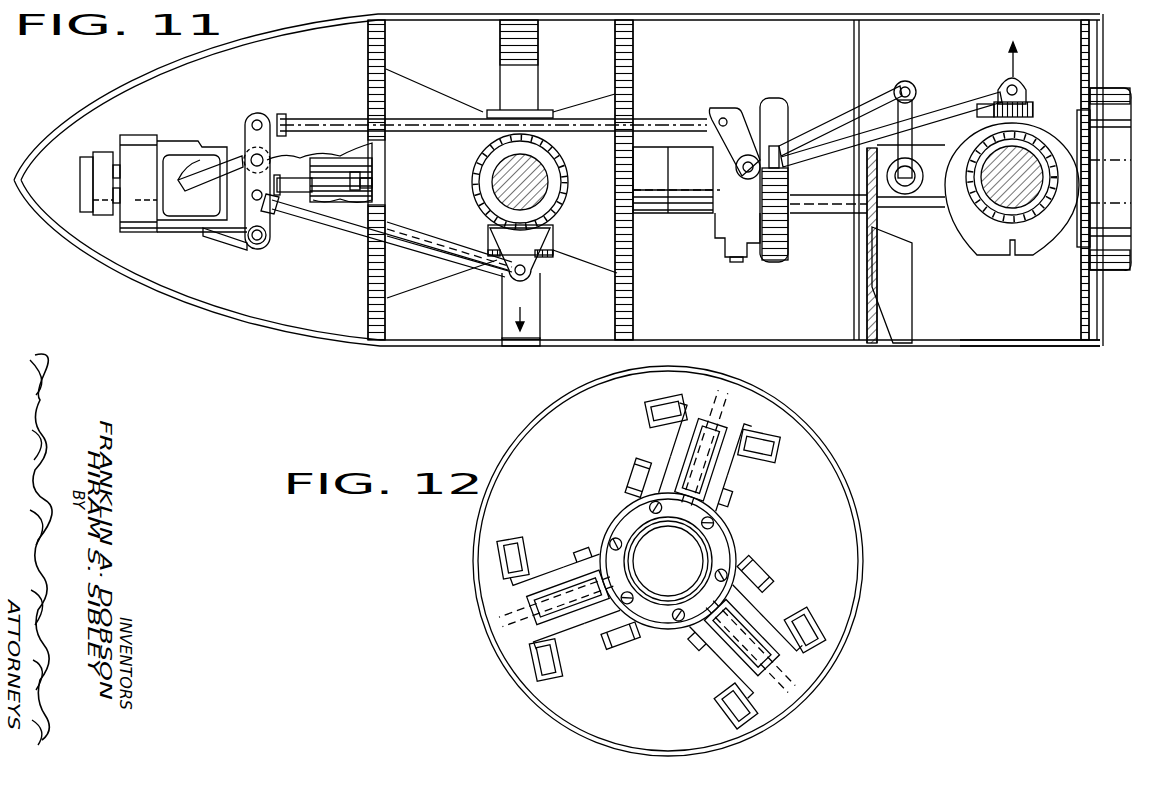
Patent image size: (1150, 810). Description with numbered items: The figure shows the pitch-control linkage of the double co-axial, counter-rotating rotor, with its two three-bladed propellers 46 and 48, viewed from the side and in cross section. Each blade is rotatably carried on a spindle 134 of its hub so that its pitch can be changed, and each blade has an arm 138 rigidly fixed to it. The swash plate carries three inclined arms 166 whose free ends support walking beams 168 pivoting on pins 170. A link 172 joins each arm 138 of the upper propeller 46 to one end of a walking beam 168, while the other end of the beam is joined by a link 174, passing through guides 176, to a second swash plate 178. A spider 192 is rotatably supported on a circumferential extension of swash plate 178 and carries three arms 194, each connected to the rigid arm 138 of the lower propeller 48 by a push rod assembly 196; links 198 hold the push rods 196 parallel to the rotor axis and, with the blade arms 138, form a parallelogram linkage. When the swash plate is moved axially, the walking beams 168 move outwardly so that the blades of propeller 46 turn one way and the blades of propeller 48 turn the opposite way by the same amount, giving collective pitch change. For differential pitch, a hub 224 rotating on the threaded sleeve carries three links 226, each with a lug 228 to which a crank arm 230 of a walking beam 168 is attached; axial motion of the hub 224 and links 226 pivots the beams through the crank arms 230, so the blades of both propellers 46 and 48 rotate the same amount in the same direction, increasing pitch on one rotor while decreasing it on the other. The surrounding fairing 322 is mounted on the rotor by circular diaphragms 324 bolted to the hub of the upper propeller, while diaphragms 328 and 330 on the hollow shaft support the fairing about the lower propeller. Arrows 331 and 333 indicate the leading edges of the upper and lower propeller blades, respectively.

In FIG. 11, the propeller 46 is at (566, 221).
In FIG. 11, the propeller 48 is at (1010, 243).
In FIG. 11, the spindle 134 is at (1027, 200).
In FIG. 11, the arm 138 is at (528, 244).
In FIG. 11, the inclined arm 166 is at (205, 171).
In FIG. 12, the inclined arm 166 is at (711, 464).
In FIG. 11, the walking beam 168 is at (246, 132).
In FIG. 12, the walking beam 168 is at (736, 421).
In FIG. 12, the pin 170 is at (715, 428).
In FIG. 11, the link 172 is at (448, 224).
In FIG. 12, the link 172 is at (774, 447).
In FIG. 11, the link 174 is at (459, 123).
In FIG. 12, the link 174 is at (646, 398).
In FIG. 11, the guide 176 is at (386, 69).
In FIG. 11, the second swash plate 178 is at (722, 227).
In FIG. 11, the spider 192 is at (820, 99).
In FIG. 11, the arm 194 is at (763, 127).
In FIG. 11, the push rod assembly 196 is at (886, 110).
In FIG. 11, the link 198 is at (908, 152).
In FIG. 11, the hub 224 is at (108, 214).
In FIG. 12, the hub 224 is at (658, 612).
In FIG. 11, the link 226 is at (173, 141).
In FIG. 11, the lug 228 is at (240, 246).
In FIG. 12, the lug 228 is at (638, 481).
In FIG. 11, the crank arm 230 is at (268, 219).
In FIG. 12, the crank arm 230 is at (598, 531).
In FIG. 11, the fairing 322 is at (588, 348).
In FIG. 12, the fairing 322 is at (856, 513).
In FIG. 11, the circular diaphragm 324 is at (1053, 347).
In FIG. 11, the diaphragm 328 is at (907, 281).
In FIG. 11, the diaphragm 330 is at (1081, 300).
In FIG. 11, the arrow 331 is at (507, 315).
In FIG. 11, the arrow 333 is at (1018, 58).